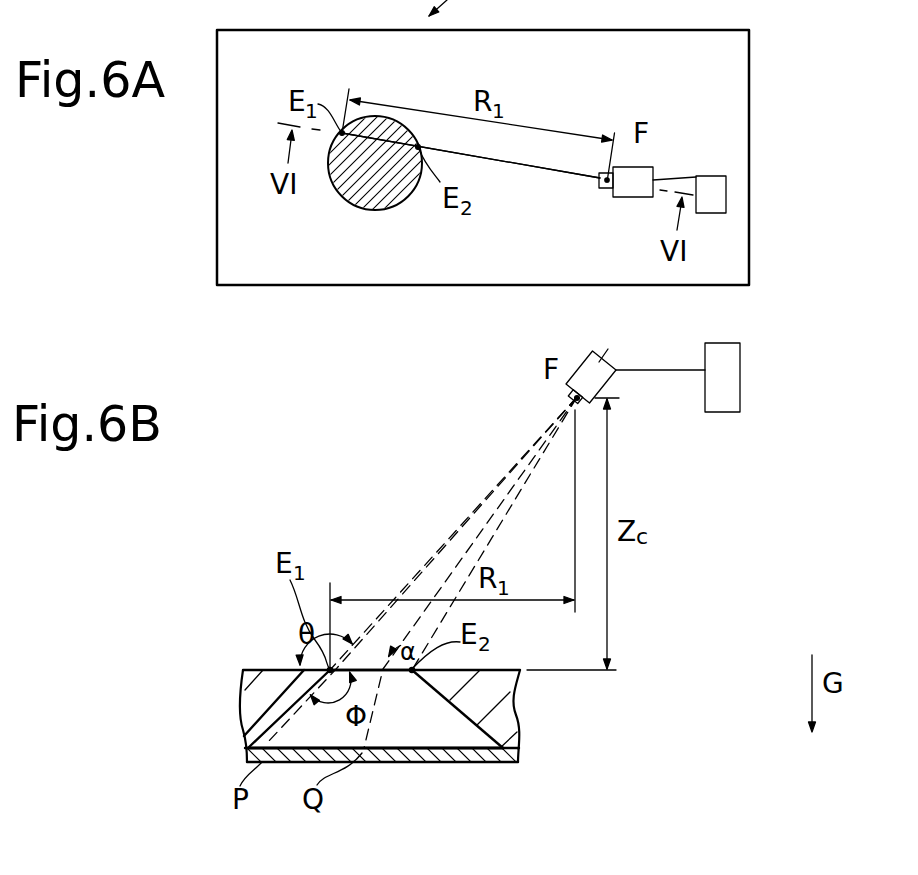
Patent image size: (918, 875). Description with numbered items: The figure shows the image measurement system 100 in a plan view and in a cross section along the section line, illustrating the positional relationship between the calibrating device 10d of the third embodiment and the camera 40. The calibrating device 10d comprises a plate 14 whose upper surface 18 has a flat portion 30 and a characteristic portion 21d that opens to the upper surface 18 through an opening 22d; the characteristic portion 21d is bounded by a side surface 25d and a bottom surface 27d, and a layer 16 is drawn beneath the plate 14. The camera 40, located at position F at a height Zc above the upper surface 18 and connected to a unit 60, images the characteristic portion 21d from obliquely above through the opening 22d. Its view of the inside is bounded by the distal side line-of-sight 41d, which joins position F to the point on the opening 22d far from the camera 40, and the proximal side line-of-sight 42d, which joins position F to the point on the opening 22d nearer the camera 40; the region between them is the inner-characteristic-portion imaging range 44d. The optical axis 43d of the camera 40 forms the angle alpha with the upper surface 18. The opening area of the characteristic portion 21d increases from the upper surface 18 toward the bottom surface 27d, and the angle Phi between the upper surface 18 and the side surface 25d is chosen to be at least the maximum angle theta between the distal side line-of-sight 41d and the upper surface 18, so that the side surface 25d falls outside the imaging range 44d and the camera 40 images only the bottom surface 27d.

In FIG. 6A, the image measurement system 100 is at (767, 67).
In FIG. 6B, the image measurement system 100 is at (723, 472).
In FIG. 6B, the calibrating device 10d is at (673, 645).
In FIG. 6A, the plate 14 is at (725, 115).
In FIG. 6B, the plate 14 is at (518, 703).
In FIG. 6B, the coating layer 16 is at (519, 757).
In FIG. 6B, the upper surface 18 is at (502, 669).
In FIG. 6A, the characteristic portion 21d is at (368, 193).
In FIG. 6B, the characteristic portion 21d is at (552, 815).
In FIG. 6A, the opening 22d is at (403, 197).
In FIG. 6B, the opening 22d is at (383, 672).
In FIG. 6B, the side surface 25d is at (293, 703).
In FIG. 6B, the bottom surface 27d is at (488, 752).
In FIG. 6B, the flat portion 30 is at (300, 669).
In FIG. 6A, the camera 40 is at (643, 167).
In FIG. 6B, the camera 40 is at (607, 385).
In FIG. 6A, the distal side line-of-sight 41d is at (508, 162).
In FIG. 6B, the distal side line-of-sight 41d is at (457, 537).
In FIG. 6A, the proximal side line-of-sight 42d is at (471, 155).
In FIG. 6B, the proximal side line-of-sight 42d is at (487, 547).
In FIG. 6B, the optical axis 43d is at (497, 500).
In FIG. 6B, the inner-characteristic-portion imaging range 44d is at (427, 577).
In FIG. 6A, the controller 60 is at (710, 176).
In FIG. 6B, the controller 60 is at (741, 382).